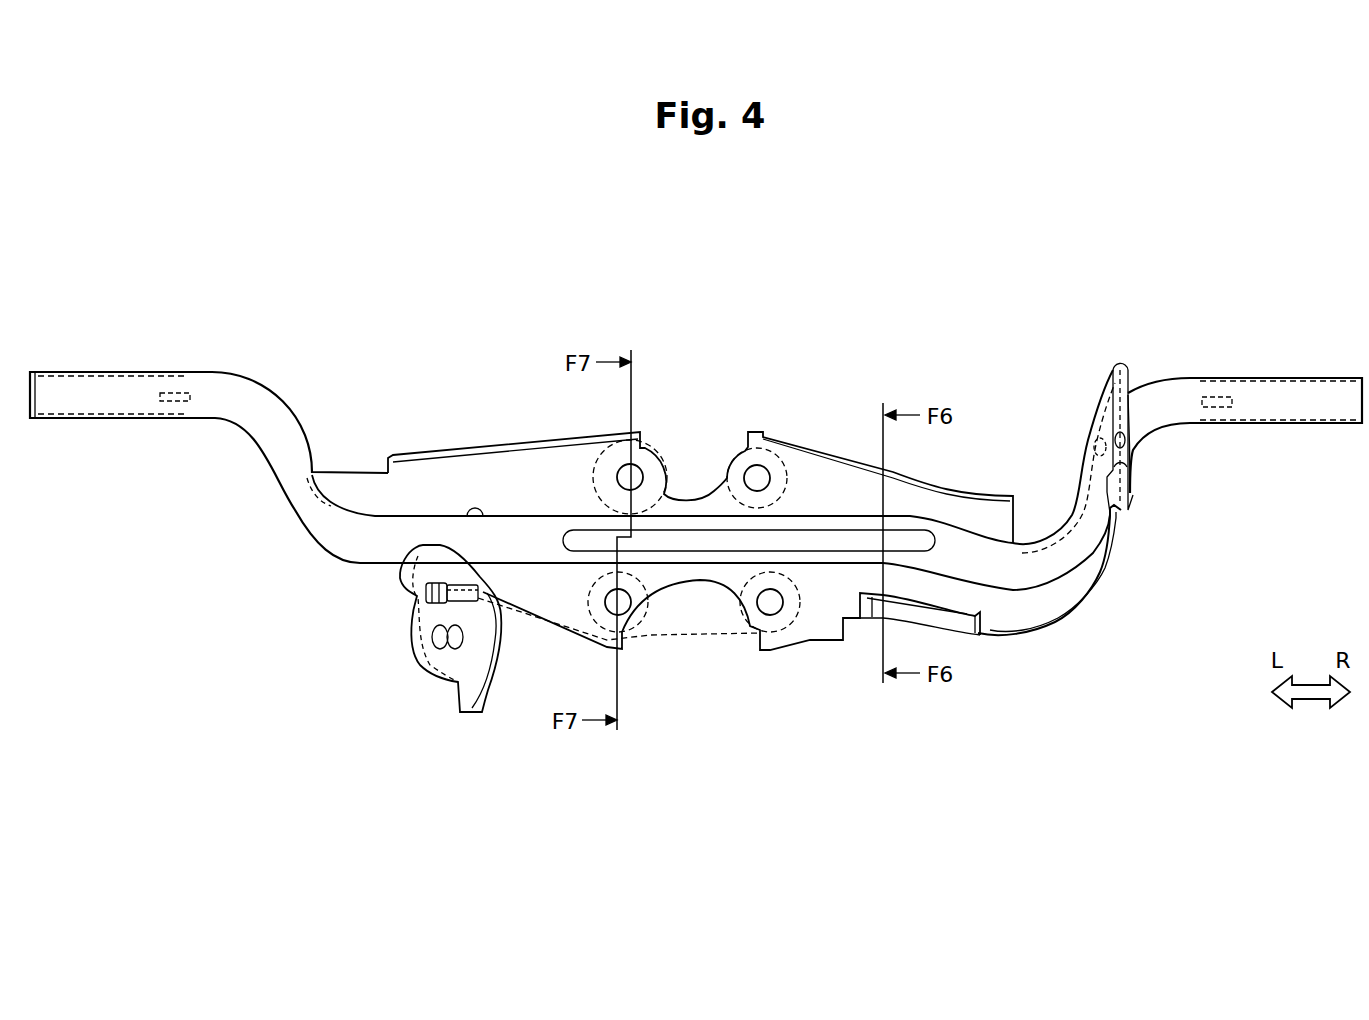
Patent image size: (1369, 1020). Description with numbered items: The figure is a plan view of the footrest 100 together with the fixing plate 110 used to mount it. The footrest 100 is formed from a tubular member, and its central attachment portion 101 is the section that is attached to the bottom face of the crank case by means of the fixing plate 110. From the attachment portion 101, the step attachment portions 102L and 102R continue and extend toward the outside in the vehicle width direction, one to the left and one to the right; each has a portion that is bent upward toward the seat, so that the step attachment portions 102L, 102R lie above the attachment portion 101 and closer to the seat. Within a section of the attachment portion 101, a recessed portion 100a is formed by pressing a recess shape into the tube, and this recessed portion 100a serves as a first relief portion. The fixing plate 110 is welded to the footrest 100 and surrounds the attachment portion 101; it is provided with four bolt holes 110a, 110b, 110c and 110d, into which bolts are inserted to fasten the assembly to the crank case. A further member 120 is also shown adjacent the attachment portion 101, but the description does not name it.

The footrest 100 is at (1198, 372).
The recessed portion 100a is at (818, 540).
The attachment portion 101 is at (541, 547).
The step attachment portion 102L is at (95, 392).
The step attachment portion 102R is at (1307, 393).
The fixing plate 110 is at (480, 467).
The bolt hole 110a is at (628, 608).
The bolt hole 110b is at (770, 605).
The bolt hole 110c is at (640, 476).
The bolt hole 110d is at (757, 477).
The side bracket 120 is at (427, 673).